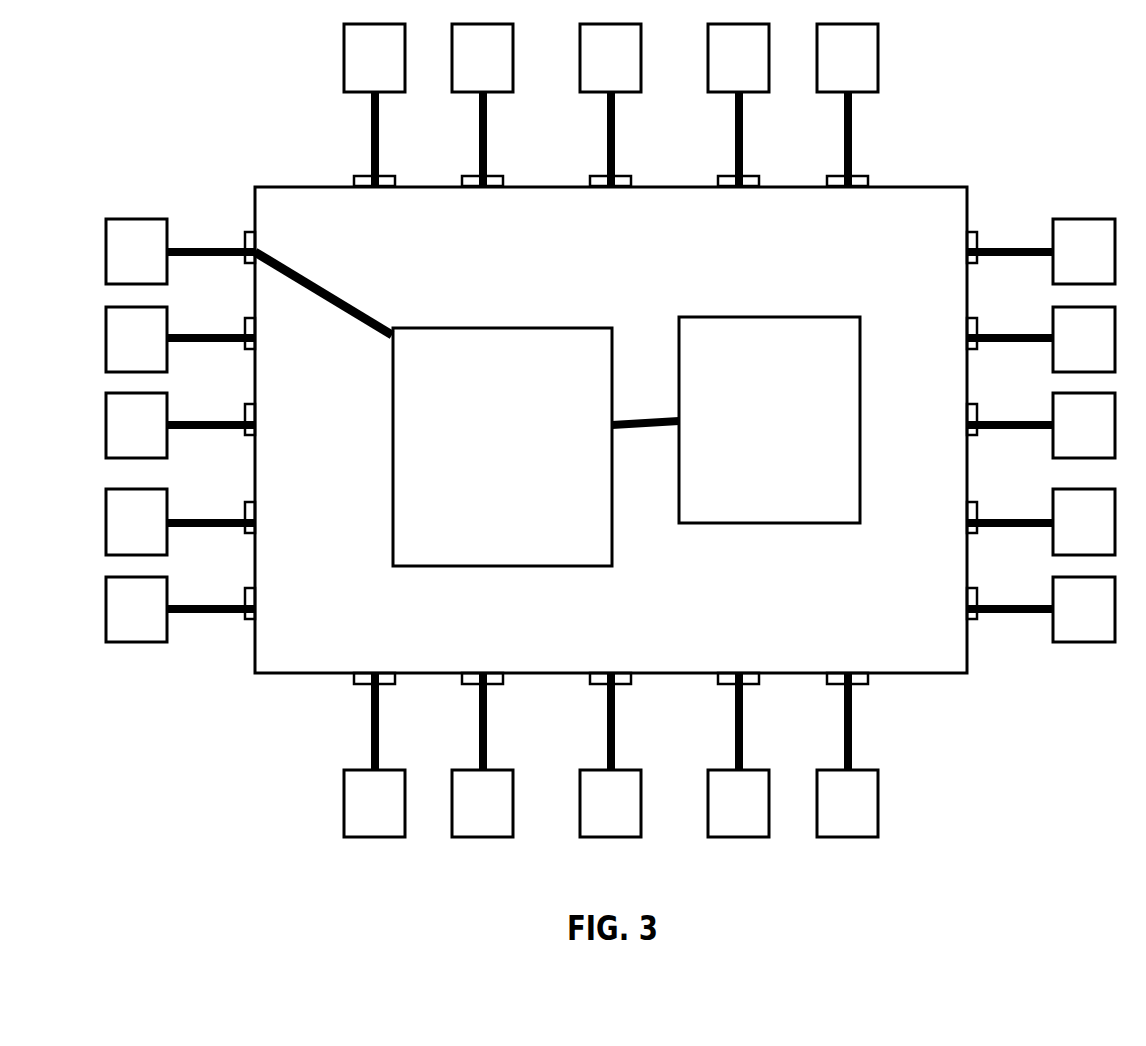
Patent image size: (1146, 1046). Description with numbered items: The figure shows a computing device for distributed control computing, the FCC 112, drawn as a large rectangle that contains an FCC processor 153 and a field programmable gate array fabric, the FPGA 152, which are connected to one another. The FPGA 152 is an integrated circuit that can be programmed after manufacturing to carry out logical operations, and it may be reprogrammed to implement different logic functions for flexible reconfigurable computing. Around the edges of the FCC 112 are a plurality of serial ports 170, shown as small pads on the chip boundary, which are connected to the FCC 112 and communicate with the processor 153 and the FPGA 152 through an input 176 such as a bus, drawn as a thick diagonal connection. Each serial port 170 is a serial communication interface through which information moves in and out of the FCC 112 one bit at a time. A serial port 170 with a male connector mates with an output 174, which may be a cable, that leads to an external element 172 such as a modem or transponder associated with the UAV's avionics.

The FCC 112 is at (1016, 87).
The FPGA 152 is at (798, 440).
The FCC processor 153 is at (522, 460).
The serial port 170 is at (353, 180).
The external element 172 is at (343, 59).
The output 174 is at (370, 741).
The input 176 is at (317, 286).